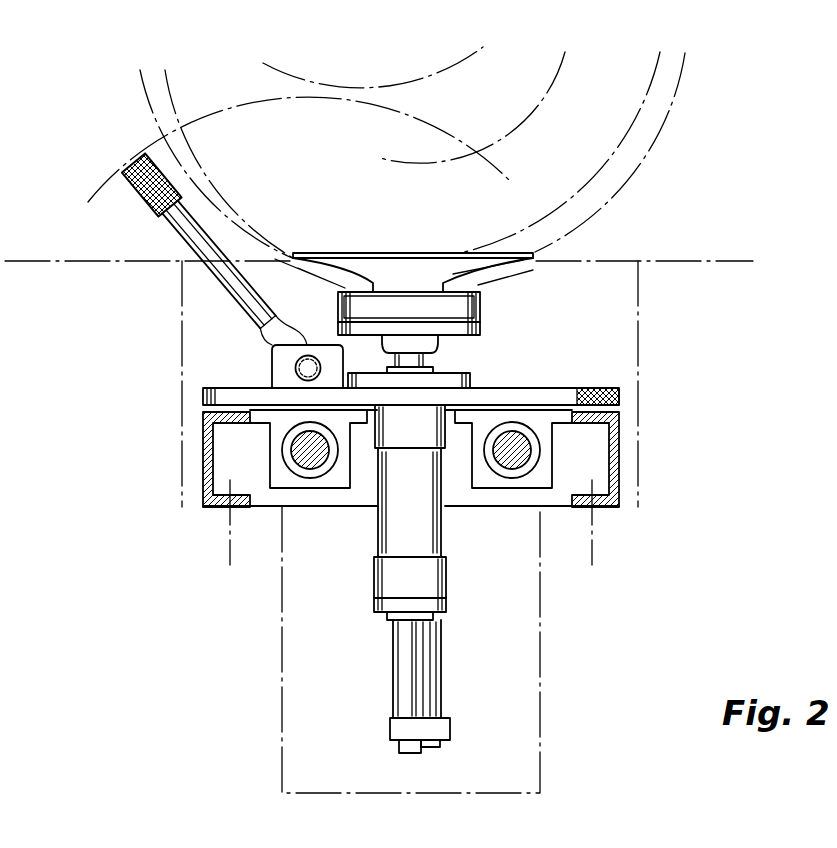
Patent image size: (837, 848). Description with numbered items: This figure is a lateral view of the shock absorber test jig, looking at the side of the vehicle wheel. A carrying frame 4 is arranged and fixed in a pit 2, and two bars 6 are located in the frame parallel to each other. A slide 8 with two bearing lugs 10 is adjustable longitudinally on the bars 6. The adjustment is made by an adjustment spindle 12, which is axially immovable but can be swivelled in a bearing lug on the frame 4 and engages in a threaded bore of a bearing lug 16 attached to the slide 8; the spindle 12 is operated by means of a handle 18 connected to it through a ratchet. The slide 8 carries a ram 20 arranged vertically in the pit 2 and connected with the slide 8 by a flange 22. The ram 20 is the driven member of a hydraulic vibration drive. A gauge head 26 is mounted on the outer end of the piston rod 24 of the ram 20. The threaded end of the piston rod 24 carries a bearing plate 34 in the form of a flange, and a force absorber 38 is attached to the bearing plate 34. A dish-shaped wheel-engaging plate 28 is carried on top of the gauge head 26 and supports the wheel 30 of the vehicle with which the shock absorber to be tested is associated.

The pit 2 is at (638, 428).
The carrying frame 4 is at (619, 470).
The bars 6 is at (300, 457).
The slide 8 is at (619, 400).
The bearing lugs 10 is at (298, 480).
The adjustment spindle 12 is at (300, 370).
The bearing lug 16 is at (287, 358).
The lever 18 is at (192, 223).
The ram 20 is at (398, 510).
The flange 22 is at (453, 384).
The piston rod 24 is at (413, 360).
The gauge head 26 is at (500, 310).
The dish-shaped wheel-engaging plate 28 is at (537, 252).
The wheel 30 is at (612, 170).
The bearing plate 34 is at (483, 328).
The force absorber 38 is at (453, 298).